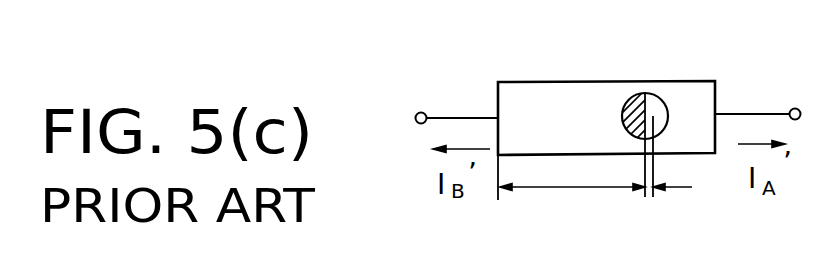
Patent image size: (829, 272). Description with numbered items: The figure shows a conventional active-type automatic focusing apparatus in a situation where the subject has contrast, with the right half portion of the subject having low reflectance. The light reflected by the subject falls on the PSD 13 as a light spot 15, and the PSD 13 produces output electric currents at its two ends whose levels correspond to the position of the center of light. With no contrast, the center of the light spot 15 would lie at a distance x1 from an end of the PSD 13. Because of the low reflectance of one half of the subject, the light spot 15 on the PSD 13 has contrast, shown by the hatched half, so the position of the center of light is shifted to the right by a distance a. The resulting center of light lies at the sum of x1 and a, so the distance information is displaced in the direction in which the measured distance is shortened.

The PSD 13 is at (698, 155).
The light spot 15 is at (652, 92).
The shift distance a is at (662, 162).
The distance from end of PSD x1 is at (571, 191).